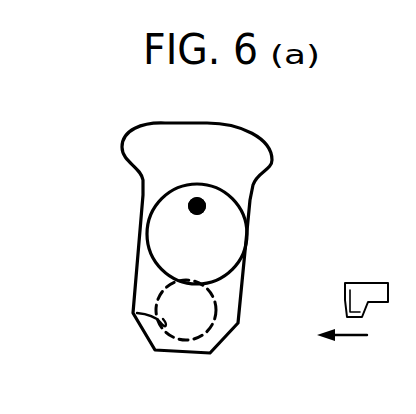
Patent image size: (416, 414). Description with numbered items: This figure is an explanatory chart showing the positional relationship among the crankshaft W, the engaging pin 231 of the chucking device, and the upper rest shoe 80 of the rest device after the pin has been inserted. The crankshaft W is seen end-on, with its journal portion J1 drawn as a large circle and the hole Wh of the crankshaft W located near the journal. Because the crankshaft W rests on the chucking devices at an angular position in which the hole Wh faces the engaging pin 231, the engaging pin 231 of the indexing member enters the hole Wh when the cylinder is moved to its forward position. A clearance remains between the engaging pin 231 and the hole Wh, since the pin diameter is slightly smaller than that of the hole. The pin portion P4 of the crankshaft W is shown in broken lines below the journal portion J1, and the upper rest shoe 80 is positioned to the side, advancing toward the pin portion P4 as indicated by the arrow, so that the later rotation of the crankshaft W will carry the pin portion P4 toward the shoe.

The crankshaft W is at (298, 146).
The hole of the crankshaft Wh is at (190, 204).
The journal portion J1 is at (160, 240).
The engaging pin 231 is at (206, 207).
The upper rest shoe 80 is at (343, 290).
The pin portion P4 is at (133, 314).